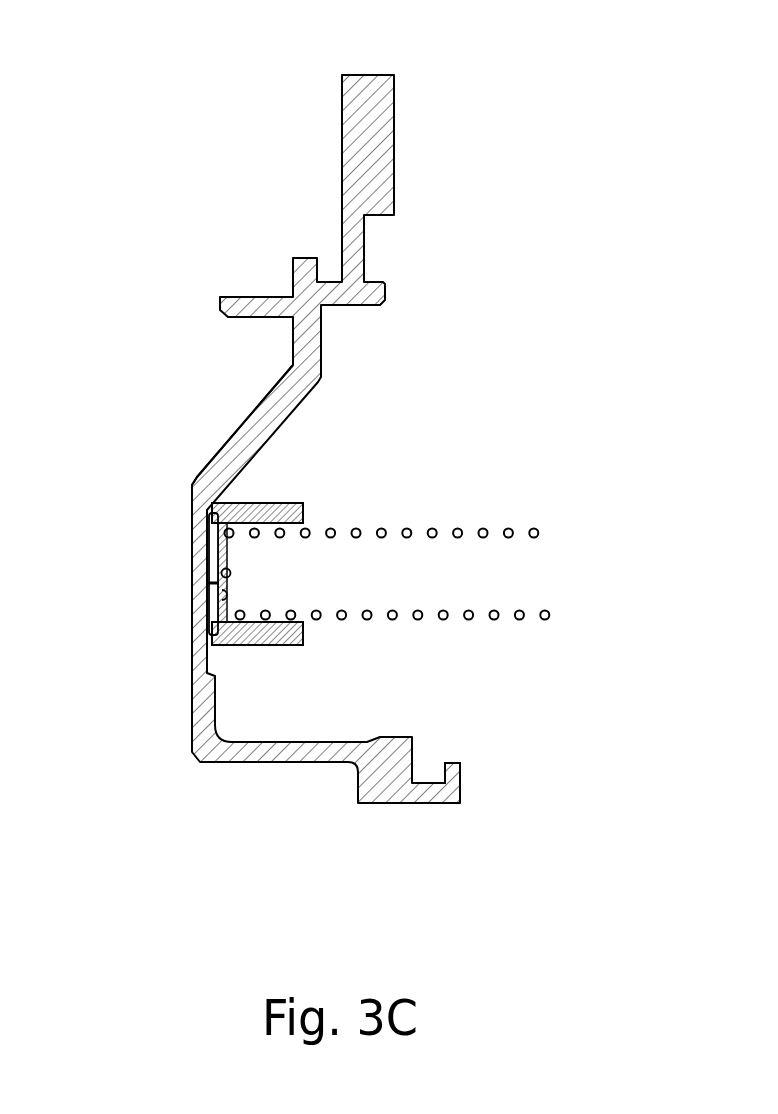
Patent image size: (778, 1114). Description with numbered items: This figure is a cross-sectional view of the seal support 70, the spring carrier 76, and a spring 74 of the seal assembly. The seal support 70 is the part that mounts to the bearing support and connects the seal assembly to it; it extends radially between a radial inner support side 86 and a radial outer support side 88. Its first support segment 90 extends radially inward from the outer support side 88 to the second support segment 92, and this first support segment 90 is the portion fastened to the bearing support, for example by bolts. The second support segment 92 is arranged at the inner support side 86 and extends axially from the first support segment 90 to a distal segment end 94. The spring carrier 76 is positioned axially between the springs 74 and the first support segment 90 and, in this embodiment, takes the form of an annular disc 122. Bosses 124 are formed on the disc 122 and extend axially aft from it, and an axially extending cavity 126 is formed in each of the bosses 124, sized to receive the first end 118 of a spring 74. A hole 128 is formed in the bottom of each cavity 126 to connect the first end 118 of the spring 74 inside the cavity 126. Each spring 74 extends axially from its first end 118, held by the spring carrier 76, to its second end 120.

The seal support 70 is at (395, 135).
The outer support side 88 is at (366, 75).
The first support segment 90 is at (192, 518).
The second support segment 92 is at (248, 762).
The inner support side 86 is at (372, 803).
The distal segment end 94 is at (463, 782).
The hole 128 is at (220, 565).
The spring carrier 76 is at (228, 500).
The bosses 124 is at (302, 500).
The cavities 126 is at (287, 645).
The first end 118 is at (222, 577).
The disc 122 is at (215, 589).
The spring 74 is at (408, 528).
The second end 120 is at (545, 612).